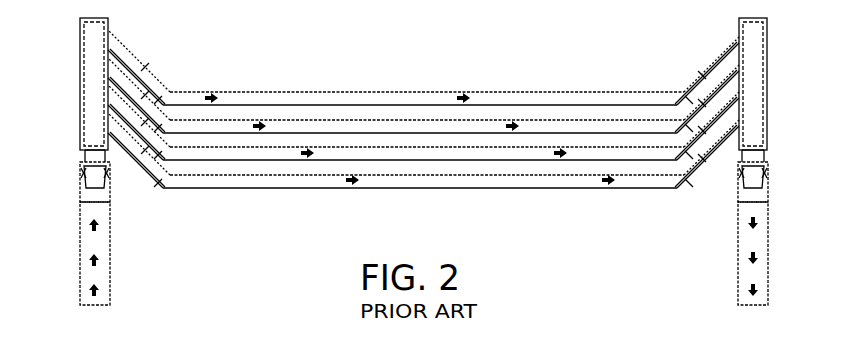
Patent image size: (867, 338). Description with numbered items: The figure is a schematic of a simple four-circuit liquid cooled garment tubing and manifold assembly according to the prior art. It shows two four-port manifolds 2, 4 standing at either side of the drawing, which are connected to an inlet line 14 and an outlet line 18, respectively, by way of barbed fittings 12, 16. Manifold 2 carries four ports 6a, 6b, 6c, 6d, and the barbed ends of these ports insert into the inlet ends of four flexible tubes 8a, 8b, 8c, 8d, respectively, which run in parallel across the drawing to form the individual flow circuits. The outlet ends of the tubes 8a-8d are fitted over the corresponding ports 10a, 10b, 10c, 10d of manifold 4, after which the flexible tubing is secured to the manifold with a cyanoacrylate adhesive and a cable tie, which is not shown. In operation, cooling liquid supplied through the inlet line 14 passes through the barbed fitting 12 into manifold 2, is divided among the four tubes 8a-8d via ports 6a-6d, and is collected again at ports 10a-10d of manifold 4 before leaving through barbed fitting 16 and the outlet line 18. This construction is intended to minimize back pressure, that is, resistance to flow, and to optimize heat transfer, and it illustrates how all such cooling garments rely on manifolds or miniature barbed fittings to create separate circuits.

The four-port manifold 2 is at (86, 83).
The four-port manifold 4 is at (762, 83).
The port 6a is at (130, 45).
The port 6b is at (146, 76).
The port 6c is at (160, 94).
The port 6d is at (136, 163).
The tube 8a is at (333, 94).
The tube 8b is at (360, 125).
The tube 8c is at (449, 155).
The tube 8d is at (477, 182).
The port 10a is at (719, 42).
The port 10b is at (702, 68).
The port 10c is at (694, 88).
The port 10d is at (721, 165).
The barbed fitting 12 is at (80, 172).
The inlet line 14 is at (85, 243).
The barbed fitting 16 is at (768, 168).
The outlet line 18 is at (760, 242).